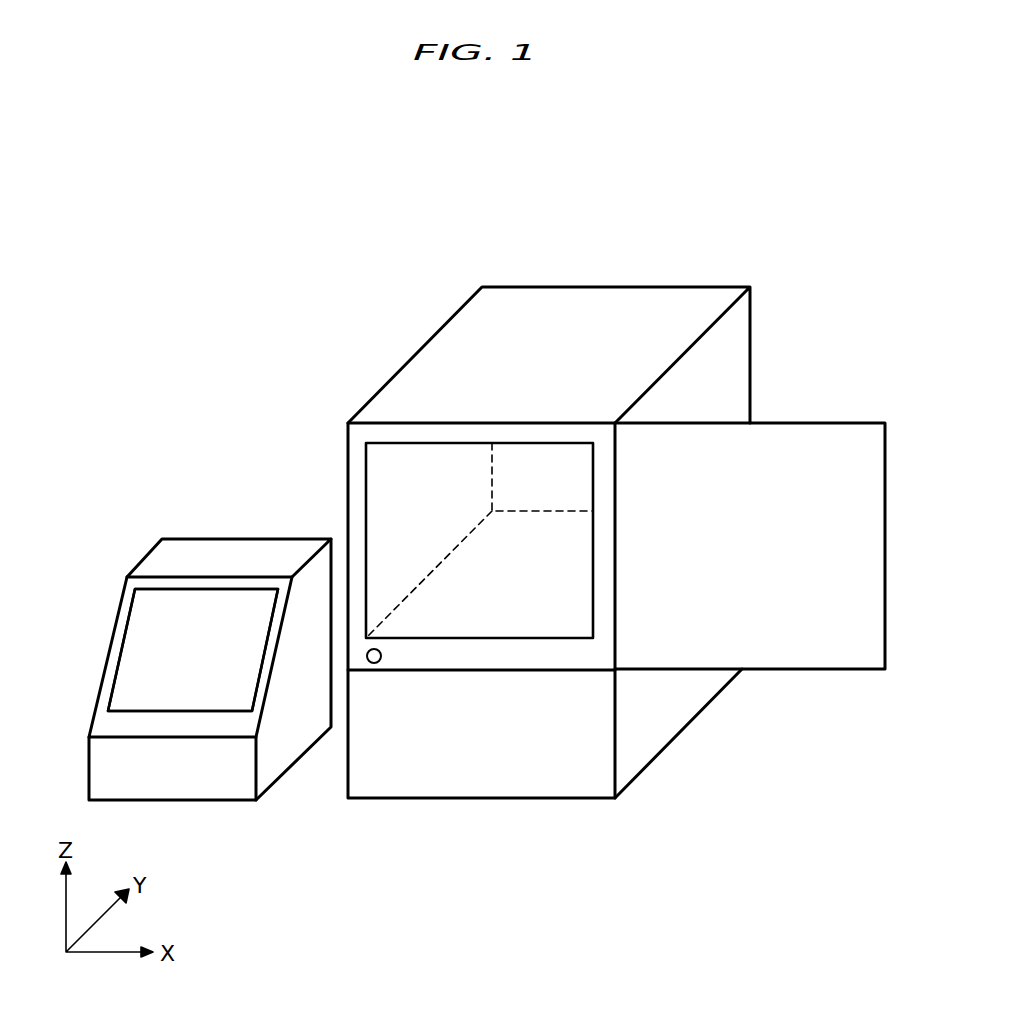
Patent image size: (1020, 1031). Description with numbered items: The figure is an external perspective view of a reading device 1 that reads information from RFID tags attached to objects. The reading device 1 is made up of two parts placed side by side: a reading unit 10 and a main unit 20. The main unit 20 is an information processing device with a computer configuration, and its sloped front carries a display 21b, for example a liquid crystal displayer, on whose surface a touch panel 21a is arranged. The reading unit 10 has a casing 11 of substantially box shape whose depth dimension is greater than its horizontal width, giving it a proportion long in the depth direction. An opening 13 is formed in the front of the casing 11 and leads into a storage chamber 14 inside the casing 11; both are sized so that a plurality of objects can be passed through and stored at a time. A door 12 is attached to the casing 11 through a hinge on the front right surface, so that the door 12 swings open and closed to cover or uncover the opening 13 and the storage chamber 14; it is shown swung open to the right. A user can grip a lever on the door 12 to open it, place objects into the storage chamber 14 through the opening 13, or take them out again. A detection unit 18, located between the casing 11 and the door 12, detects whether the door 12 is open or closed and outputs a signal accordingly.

The reading device 1 is at (797, 162).
The reading unit 10 is at (766, 320).
The casing 11 is at (648, 286).
The door 12 is at (840, 422).
The opening 13 is at (409, 470).
The storage chamber 14 is at (540, 574).
The detection unit 18 is at (375, 664).
The main unit 20 is at (257, 531).
The touch panel 21a is at (205, 622).
The display 21b is at (193, 650).